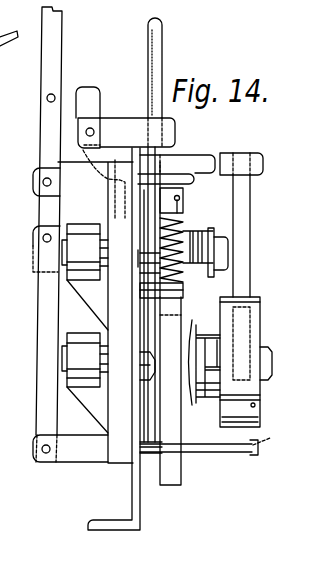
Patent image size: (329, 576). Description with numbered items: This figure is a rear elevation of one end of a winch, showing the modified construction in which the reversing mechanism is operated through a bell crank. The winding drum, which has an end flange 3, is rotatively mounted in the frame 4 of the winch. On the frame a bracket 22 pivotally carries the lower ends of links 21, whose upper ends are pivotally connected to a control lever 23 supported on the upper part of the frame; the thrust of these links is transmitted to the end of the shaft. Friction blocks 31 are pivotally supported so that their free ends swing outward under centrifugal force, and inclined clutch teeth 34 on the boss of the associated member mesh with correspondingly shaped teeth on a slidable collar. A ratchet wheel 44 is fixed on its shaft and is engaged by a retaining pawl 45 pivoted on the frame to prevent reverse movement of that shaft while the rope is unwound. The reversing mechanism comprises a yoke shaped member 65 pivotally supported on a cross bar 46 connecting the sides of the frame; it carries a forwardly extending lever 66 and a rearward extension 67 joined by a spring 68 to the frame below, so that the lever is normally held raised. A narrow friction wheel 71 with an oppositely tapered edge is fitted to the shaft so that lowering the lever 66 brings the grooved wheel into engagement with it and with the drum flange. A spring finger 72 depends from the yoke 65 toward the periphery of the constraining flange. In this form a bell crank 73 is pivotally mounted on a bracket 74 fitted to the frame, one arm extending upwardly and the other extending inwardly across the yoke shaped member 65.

The end flange 3 is at (147, 338).
The frame 4 is at (136, 420).
The links 21 is at (40, 323).
The bracket 22 is at (70, 448).
The control lever 23 is at (60, 60).
The friction blocks 31 is at (257, 318).
The inclined clutch teeth 34 is at (193, 338).
The ratchet wheel 44 is at (183, 295).
The retaining pawl 45 is at (178, 477).
The cross bar 46 is at (195, 180).
The yoke shaped member 65 is at (228, 151).
The lever 66 is at (148, 58).
The rearward extension 67 is at (181, 197).
The spring 68 is at (183, 223).
The friction wheel 71 is at (157, 257).
The spring finger 72 is at (243, 223).
The bell crank 73 is at (93, 103).
The bracket 74 is at (95, 155).